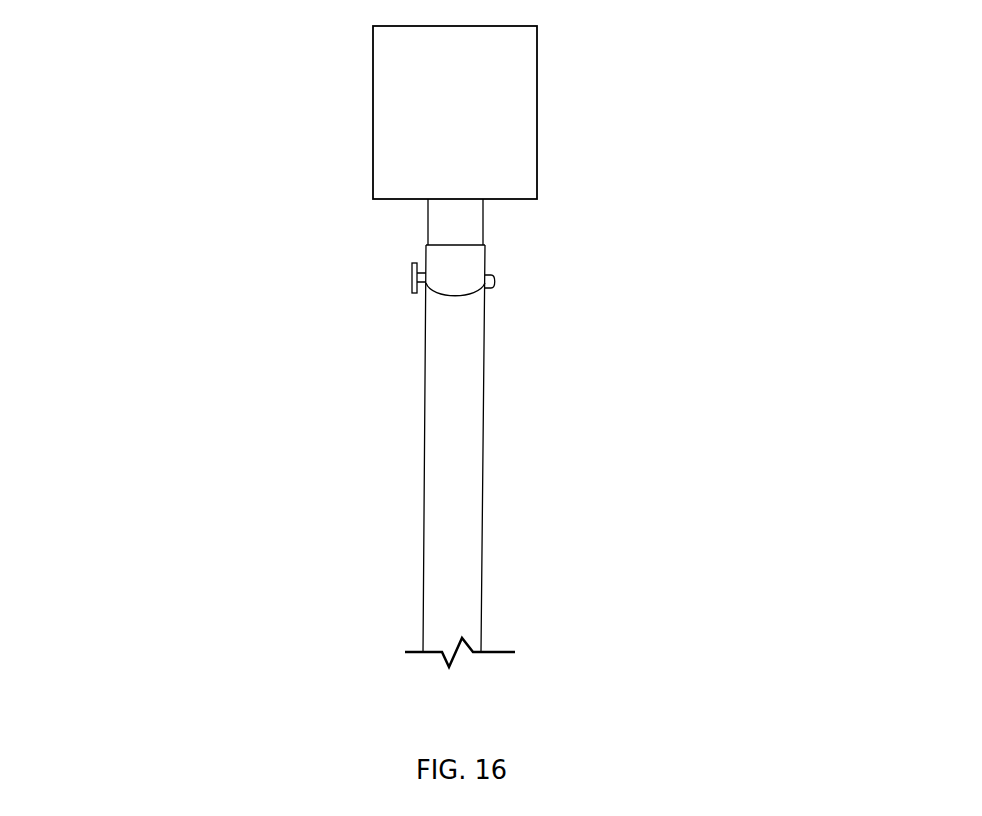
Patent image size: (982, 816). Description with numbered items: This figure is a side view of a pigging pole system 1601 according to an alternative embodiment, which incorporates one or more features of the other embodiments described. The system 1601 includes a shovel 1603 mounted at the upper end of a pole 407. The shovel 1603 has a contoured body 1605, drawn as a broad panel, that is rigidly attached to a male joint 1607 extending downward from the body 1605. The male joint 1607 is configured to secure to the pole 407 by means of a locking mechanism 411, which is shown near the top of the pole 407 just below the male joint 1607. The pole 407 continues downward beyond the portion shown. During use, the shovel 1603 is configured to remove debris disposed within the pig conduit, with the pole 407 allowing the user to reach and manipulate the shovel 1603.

The pigging pole system 1601 is at (140, 410).
The shovel 1603 is at (411, 135).
The contoured body 1605 is at (537, 90).
The male joint 1607 is at (485, 228).
The locking mechanism 411 is at (522, 303).
The pole 407 is at (482, 511).